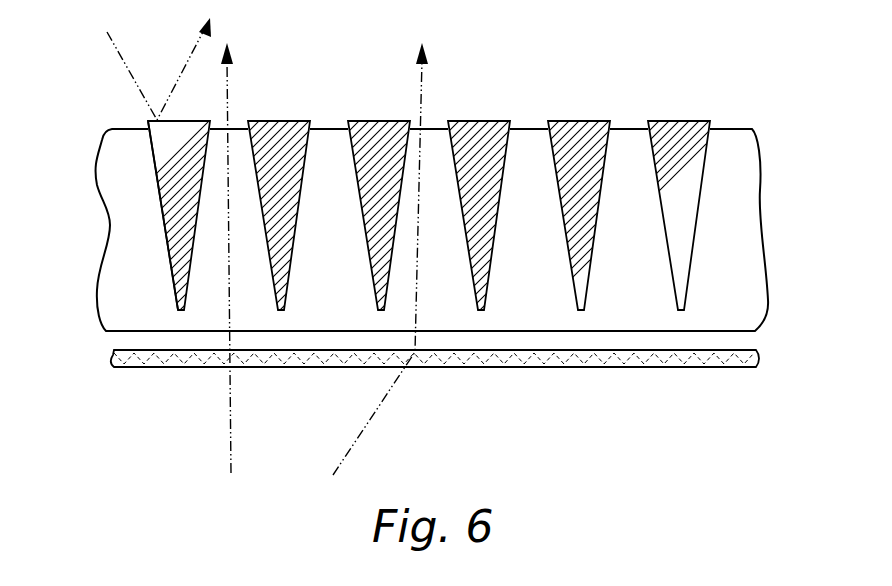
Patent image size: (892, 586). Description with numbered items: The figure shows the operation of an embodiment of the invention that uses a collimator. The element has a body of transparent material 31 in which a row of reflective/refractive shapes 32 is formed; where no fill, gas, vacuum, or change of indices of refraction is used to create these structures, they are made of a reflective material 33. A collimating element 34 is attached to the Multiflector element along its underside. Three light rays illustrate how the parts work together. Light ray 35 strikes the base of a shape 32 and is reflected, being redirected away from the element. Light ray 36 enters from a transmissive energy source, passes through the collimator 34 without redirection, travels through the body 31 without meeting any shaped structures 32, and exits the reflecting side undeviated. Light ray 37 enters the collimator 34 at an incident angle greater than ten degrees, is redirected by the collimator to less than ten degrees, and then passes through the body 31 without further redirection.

The transparent material 31 is at (717, 267).
The reflective/refractive shapes 32 is at (160, 203).
The reflective material 33 is at (681, 119).
The collimating element 34 is at (675, 367).
The light ray 35 is at (133, 82).
The light ray 36 is at (230, 88).
The light ray 37 is at (422, 87).